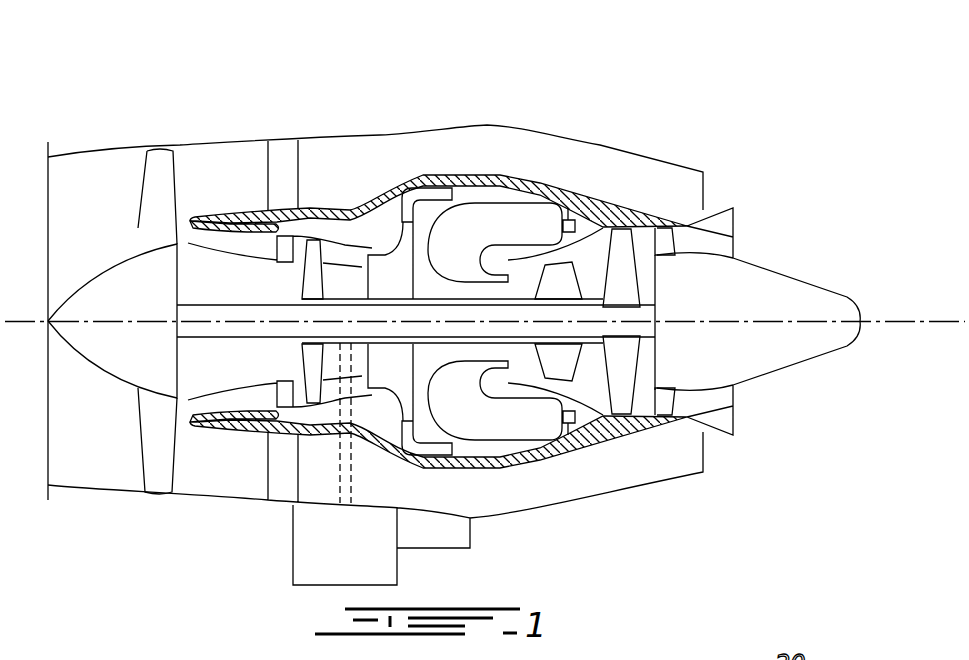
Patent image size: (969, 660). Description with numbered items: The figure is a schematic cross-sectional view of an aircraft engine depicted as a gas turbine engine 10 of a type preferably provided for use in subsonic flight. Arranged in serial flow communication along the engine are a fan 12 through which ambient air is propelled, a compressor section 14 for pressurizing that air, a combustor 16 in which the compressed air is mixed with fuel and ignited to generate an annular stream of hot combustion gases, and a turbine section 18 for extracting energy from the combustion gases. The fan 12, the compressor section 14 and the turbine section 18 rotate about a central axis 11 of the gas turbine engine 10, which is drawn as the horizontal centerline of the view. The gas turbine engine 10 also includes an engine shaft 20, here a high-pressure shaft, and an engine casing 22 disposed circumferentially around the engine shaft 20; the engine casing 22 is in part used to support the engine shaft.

The gas turbine engine 10 is at (612, 94).
The central axis 11 is at (888, 322).
The fan 12 is at (155, 432).
The compressor section 14 is at (335, 252).
The combustor 16 is at (495, 218).
The turbine section 18 is at (573, 370).
The engine shaft 20 is at (352, 298).
The engine casing 22 is at (633, 202).